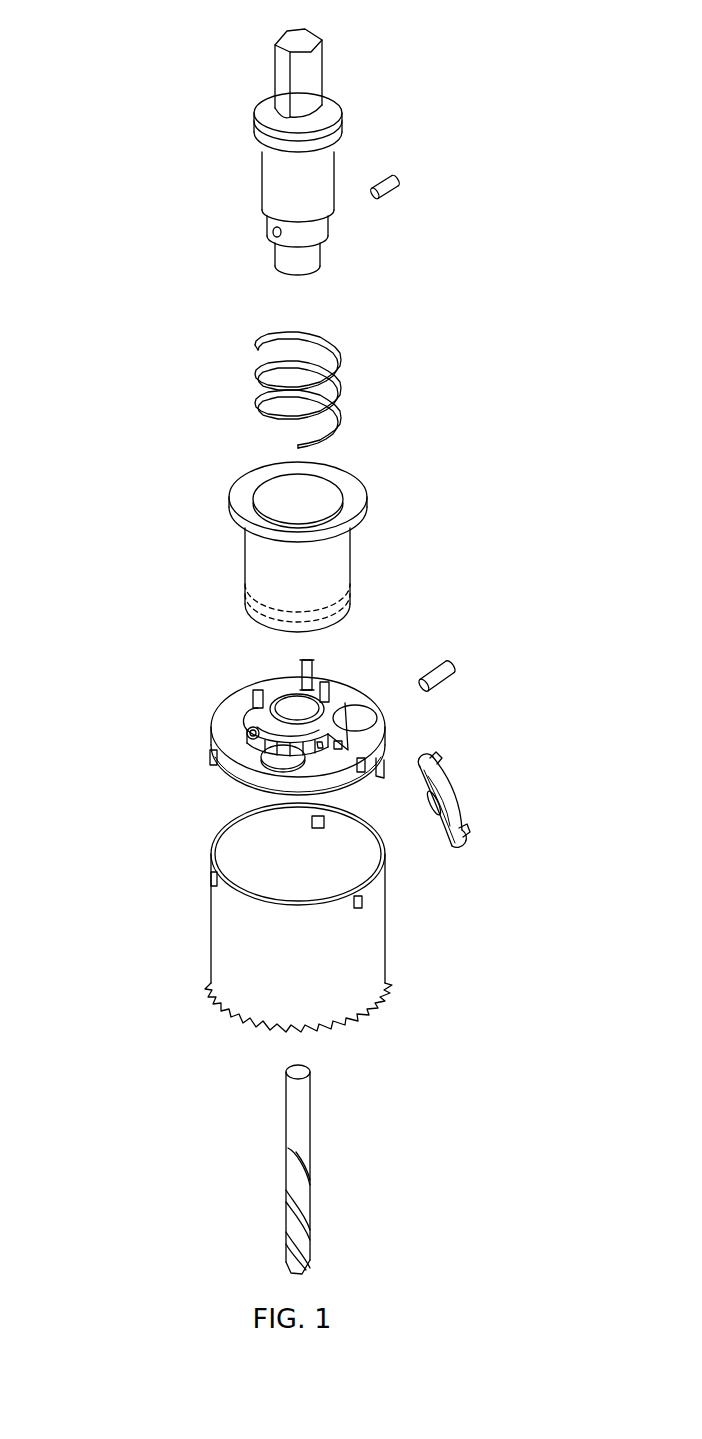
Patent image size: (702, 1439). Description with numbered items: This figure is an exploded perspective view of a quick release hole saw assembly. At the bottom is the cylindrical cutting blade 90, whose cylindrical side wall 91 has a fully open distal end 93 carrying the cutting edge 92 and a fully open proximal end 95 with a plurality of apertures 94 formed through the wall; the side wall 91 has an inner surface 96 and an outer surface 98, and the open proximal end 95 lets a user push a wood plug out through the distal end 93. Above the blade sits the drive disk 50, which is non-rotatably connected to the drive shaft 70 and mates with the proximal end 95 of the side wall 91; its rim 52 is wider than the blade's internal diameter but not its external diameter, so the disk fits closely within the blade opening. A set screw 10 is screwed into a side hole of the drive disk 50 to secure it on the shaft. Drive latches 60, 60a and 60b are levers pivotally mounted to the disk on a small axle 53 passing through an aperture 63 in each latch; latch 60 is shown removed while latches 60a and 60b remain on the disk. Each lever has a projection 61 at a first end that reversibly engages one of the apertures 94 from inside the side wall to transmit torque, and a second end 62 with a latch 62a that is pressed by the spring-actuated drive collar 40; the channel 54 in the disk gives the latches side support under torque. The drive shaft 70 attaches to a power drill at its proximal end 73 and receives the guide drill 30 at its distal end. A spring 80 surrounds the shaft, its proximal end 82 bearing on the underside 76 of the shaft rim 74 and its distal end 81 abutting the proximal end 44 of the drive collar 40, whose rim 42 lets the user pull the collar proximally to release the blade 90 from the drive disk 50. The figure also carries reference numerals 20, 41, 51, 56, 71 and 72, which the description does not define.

The set screw 10 is at (450, 683).
The pin 20 is at (395, 172).
The guide drill 30 is at (285, 1117).
The spring-actuated drive collar 40 is at (301, 533).
The bushing cylindrical body 41 is at (240, 587).
The rim 42 is at (367, 520).
The proximal end 44 is at (343, 490).
The drive disk 50 is at (285, 707).
The cap rim 51 is at (330, 792).
The rim 52 is at (383, 768).
The axle 53 is at (215, 757).
The channel 54 is at (350, 722).
The cap slot 56 is at (362, 768).
The drive latch 60 is at (481, 787).
The drive latch 60a is at (320, 663).
The drive latch 60b is at (223, 722).
The projection 61 is at (462, 835).
The second end 62 is at (428, 762).
The latch 62a is at (435, 772).
The aperture 63 is at (438, 800).
The drive shaft 70 is at (293, 151).
The arbor body 71 is at (327, 192).
The arbor stem 72 is at (310, 272).
The proximal end 73 is at (303, 65).
The rim 74 is at (337, 137).
The underside 76 is at (338, 147).
The spring 80 is at (246, 374).
The distal end 81 is at (258, 432).
The proximal end 82 is at (270, 333).
The cylindrical cutting blade 90 is at (276, 922).
The cylindrical side wall 91 is at (282, 962).
The cutting edge 92 is at (360, 1020).
The distal end 93 is at (235, 1017).
The apertures 94 is at (370, 823).
The proximal end 95 is at (283, 853).
The inner surface 96 is at (353, 852).
The outer surface 98 is at (355, 957).